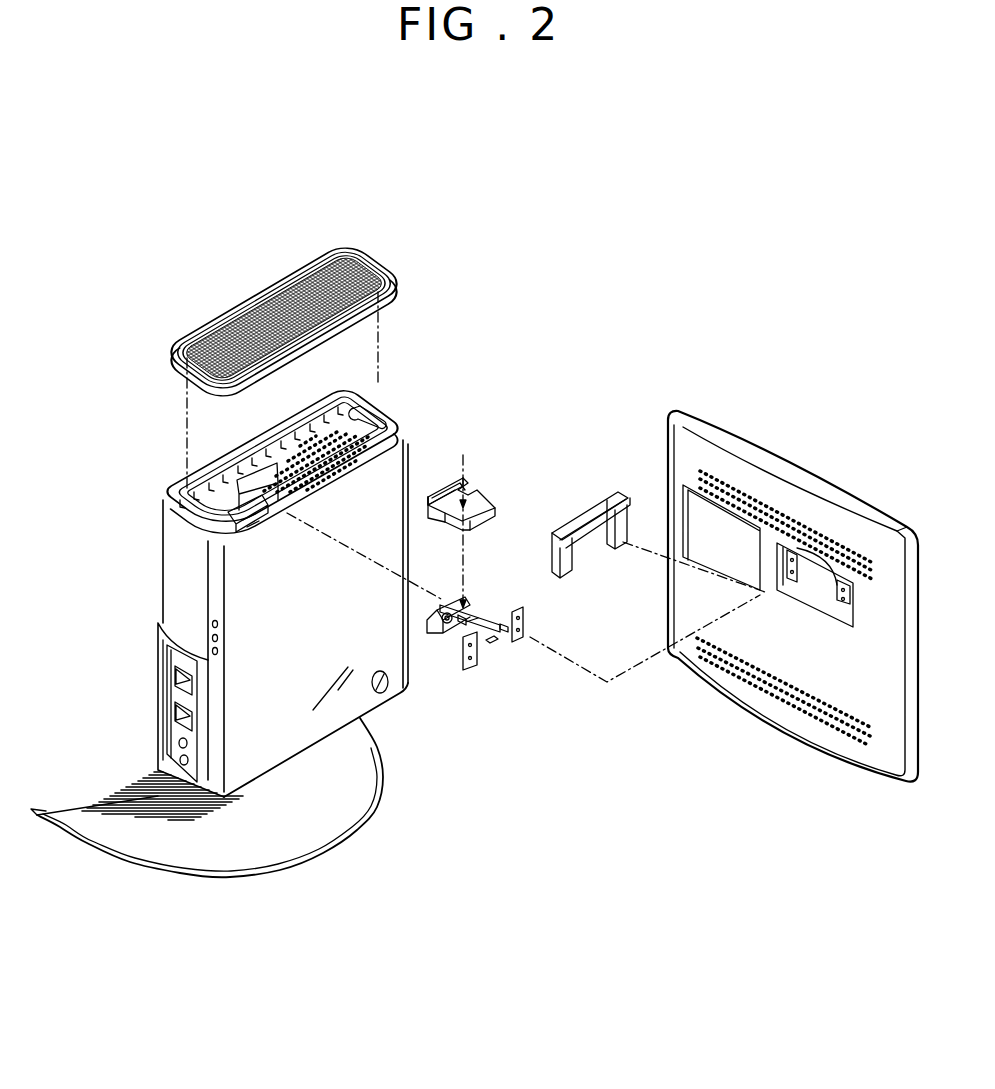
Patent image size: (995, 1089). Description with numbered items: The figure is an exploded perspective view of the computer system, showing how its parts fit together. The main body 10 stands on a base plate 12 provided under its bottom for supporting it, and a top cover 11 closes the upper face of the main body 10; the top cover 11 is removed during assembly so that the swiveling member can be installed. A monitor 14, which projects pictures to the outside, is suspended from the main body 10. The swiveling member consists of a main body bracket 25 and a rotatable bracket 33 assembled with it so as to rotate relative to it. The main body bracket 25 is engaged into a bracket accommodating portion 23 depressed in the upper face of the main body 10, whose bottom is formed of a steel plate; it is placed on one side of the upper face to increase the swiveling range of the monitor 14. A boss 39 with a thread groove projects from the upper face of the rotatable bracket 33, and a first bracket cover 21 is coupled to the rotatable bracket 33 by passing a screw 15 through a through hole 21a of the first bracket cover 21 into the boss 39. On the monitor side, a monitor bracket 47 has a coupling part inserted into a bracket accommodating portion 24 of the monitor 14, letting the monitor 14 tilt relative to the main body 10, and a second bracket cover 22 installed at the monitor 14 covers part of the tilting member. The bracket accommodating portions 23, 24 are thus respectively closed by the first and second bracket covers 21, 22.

The main body 10 is at (168, 568).
The top cover 11 is at (406, 280).
The base plate 12 is at (132, 848).
The monitor 14 is at (800, 462).
The screw 15 is at (464, 452).
The first bracket cover 21 is at (483, 497).
The through hole 21a is at (428, 496).
The second bracket cover 22 is at (607, 497).
The bracket accommodating portion 23 is at (243, 530).
The bracket accommodating portion 24 is at (818, 604).
The main body bracket 25 is at (430, 632).
The rotatable bracket 33 is at (462, 652).
The boss 39 is at (468, 606).
The monitor bracket 47 is at (505, 642).